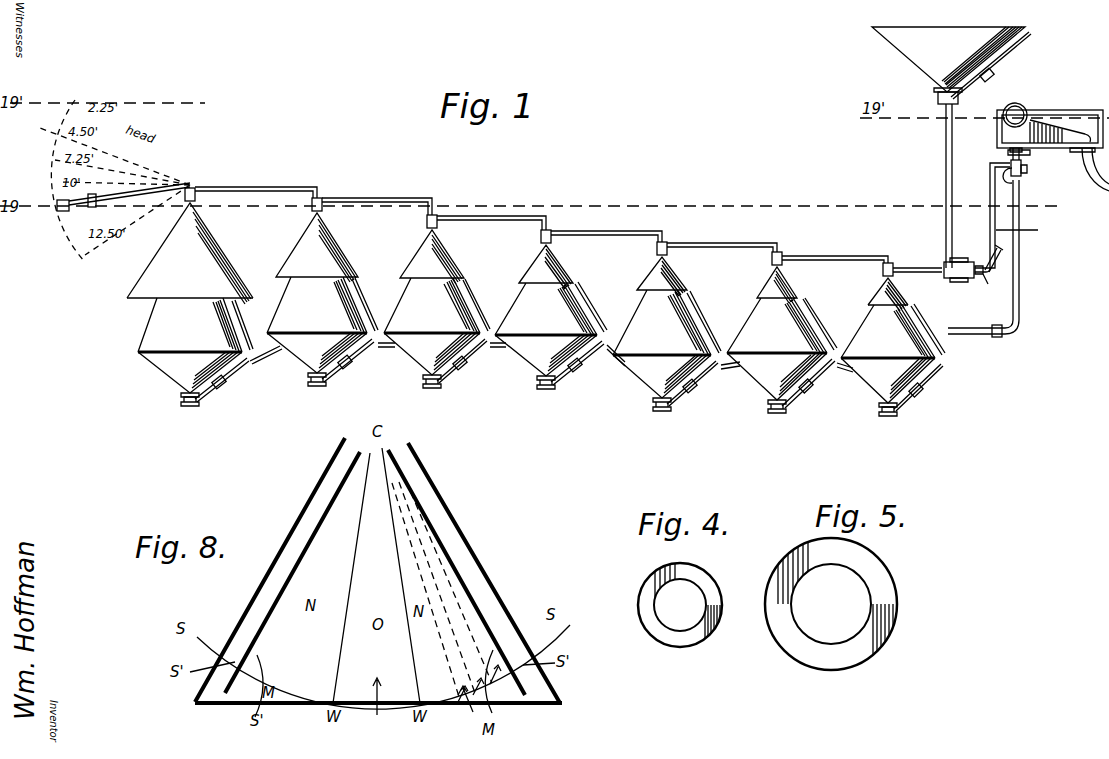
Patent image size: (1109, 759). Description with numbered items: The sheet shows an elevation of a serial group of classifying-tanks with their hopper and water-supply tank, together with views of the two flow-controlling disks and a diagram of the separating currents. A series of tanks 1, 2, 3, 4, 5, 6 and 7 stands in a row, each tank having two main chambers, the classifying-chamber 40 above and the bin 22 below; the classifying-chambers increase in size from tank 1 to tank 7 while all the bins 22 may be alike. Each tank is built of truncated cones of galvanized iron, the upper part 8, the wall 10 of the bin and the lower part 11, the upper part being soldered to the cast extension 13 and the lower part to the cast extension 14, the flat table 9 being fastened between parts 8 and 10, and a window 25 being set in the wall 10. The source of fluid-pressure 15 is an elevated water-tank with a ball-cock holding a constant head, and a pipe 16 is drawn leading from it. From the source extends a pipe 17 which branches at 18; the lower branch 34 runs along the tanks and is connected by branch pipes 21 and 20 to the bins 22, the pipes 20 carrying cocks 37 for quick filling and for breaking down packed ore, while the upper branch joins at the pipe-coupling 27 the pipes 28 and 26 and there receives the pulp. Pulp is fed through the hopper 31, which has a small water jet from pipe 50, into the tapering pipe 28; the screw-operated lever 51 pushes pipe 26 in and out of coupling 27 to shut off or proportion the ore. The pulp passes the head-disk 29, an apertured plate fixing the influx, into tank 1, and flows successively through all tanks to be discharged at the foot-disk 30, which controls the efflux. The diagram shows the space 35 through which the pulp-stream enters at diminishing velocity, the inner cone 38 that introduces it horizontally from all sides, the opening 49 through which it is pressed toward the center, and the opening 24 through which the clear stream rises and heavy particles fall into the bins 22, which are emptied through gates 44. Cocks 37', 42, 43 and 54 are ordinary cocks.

In FIG. 1, the tank 1 is at (900, 372).
In FIG. 1, the tank 2 is at (782, 347).
In FIG. 1, the tank 3 is at (667, 342).
In FIG. 1, the tank 4 is at (551, 324).
In FIG. 1, the tank 5 is at (437, 315).
In FIG. 1, the tank 6 is at (322, 306).
In FIG. 1, the tank 7 is at (180, 310).
In FIG. 1, the upper part 8 is at (890, 290).
In FIG. 1, the table 9 is at (160, 305).
In FIG. 8, the table 9 is at (473, 700).
In FIG. 1, the wall 10 is at (858, 338).
In FIG. 1, the lower part 11 is at (858, 374).
In FIG. 1, the cast extension 13 is at (888, 262).
In FIG. 1, the cast extension 14 is at (880, 405).
In FIG. 1, the source of fluid-pressure 15 is at (1050, 136).
In FIG. 1, the supply pipe 16 is at (1082, 152).
In FIG. 1, the pipe 17 is at (1008, 153).
In FIG. 1, the branch 18 is at (1016, 183).
In FIG. 1, the branch pipe 20 is at (232, 372).
In FIG. 1, the branch pipe 21 is at (593, 327).
In FIG. 1, the bin 22 is at (536, 350).
In FIG. 8, the opening 24 is at (399, 705).
In FIG. 1, the window 25 is at (880, 322).
In FIG. 1, the pipe 26 is at (564, 218).
In FIG. 1, the pipe-coupling 27 is at (945, 277).
In FIG. 1, the pipe 28 is at (946, 180).
In FIG. 4, the head-disk 29 is at (638, 600).
In FIG. 1, the foot-disk 30 is at (62, 212).
In FIG. 5, the foot-disk 30 is at (788, 579).
In FIG. 1, the hopper 31 is at (948, 59).
In FIG. 1, the lower branch 34 is at (1019, 205).
In FIG. 8, the space 35 is at (455, 538).
In FIG. 1, the cock 37 is at (581, 394).
In FIG. 1, the cock 37' is at (1007, 340).
In FIG. 8, the inner cone 38 is at (475, 598).
In FIG. 1, the classifying-chamber 40 is at (898, 272).
In FIG. 1, the cock 42 is at (1027, 168).
In FIG. 1, the cock 43 is at (92, 207).
In FIG. 1, the gate 44 is at (905, 423).
In FIG. 8, the opening 49 is at (580, 690).
In FIG. 1, the pipe 50 is at (982, 69).
In FIG. 1, the screw-operated lever 51 is at (962, 262).
In FIG. 1, the cock 54 is at (993, 286).